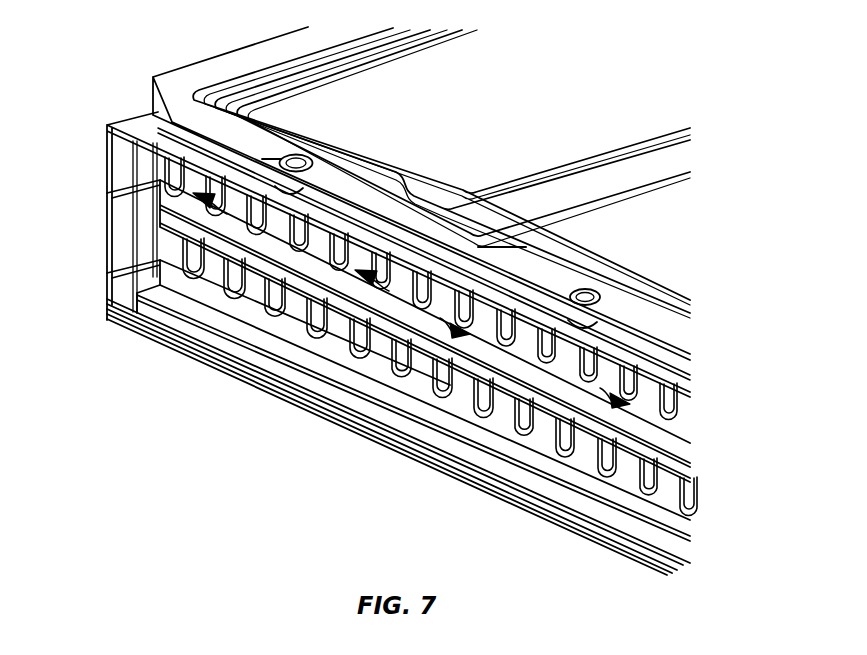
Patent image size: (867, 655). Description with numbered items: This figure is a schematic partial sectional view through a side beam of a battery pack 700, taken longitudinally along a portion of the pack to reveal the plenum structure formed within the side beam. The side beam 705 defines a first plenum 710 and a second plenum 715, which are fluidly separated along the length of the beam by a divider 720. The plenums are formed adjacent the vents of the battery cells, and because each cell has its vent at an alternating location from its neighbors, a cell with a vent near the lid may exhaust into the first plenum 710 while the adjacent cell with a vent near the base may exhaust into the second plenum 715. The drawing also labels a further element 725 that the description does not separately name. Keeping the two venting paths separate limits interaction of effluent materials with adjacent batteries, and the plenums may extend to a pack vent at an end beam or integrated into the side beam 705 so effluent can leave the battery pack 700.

The battery pack 700 is at (97, 78).
The side beam 705 is at (142, 330).
The first plenum 710 is at (690, 398).
The second plenum 715 is at (680, 532).
The divider 720 is at (680, 457).
The top cover plate 725 is at (688, 368).